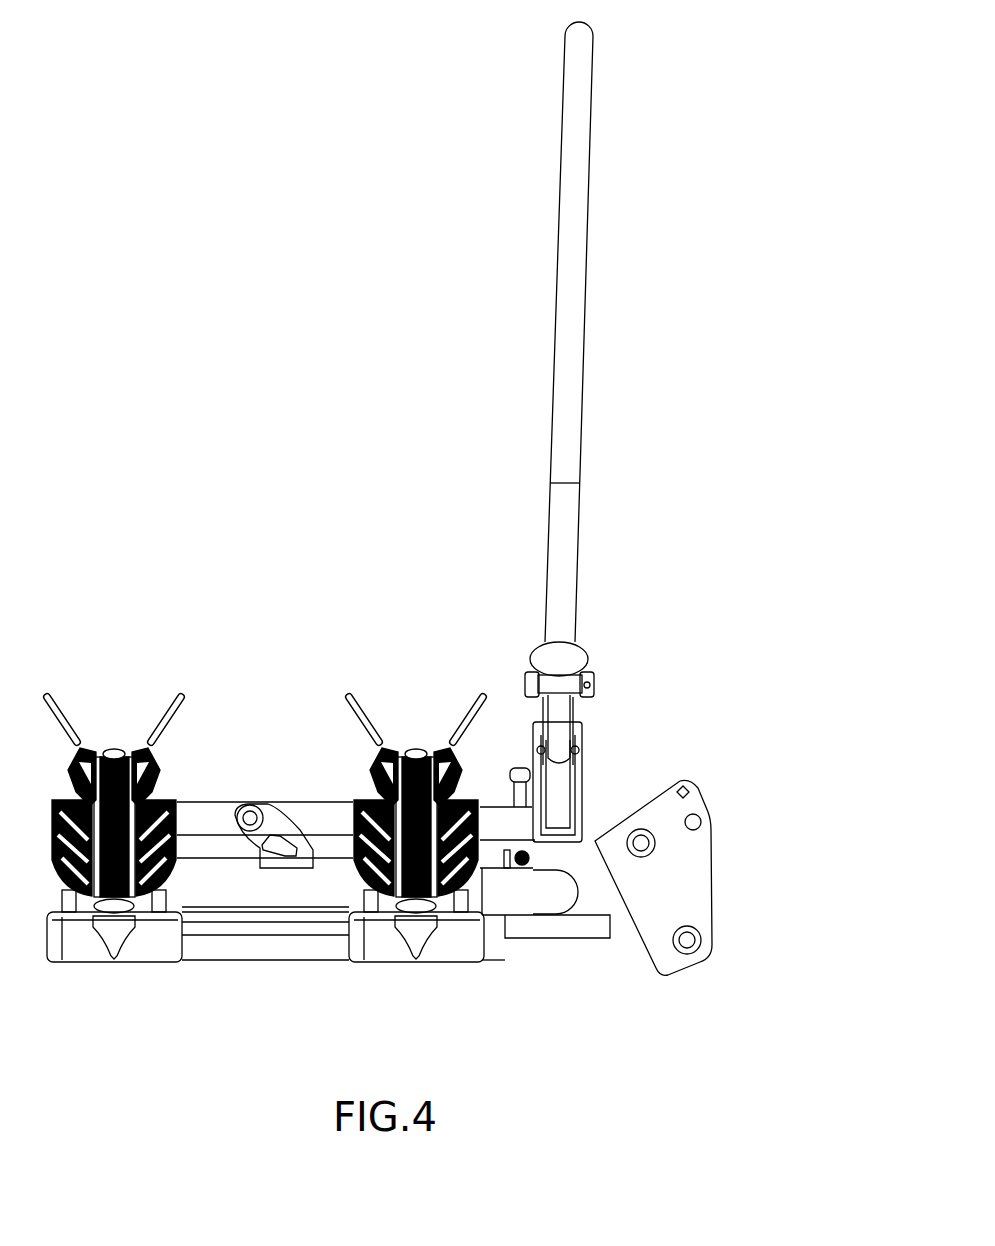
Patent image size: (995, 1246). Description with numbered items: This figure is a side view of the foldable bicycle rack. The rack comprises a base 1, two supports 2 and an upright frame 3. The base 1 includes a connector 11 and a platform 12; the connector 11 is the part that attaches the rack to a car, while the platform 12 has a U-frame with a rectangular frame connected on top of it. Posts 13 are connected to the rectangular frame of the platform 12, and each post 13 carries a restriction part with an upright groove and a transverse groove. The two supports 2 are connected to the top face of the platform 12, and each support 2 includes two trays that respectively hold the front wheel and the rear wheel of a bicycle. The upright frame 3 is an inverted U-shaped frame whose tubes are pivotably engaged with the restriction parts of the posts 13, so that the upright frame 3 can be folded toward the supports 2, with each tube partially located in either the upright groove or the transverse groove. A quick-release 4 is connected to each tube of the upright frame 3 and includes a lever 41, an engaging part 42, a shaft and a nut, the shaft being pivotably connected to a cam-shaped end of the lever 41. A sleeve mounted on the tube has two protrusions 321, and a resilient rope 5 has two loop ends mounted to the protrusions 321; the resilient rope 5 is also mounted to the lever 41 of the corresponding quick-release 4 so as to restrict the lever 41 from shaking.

The base 1 is at (720, 776).
The connector 11 is at (573, 938).
The platform 12 is at (290, 803).
The post 13 is at (533, 870).
The support 2 is at (112, 748).
The upright frame 3 is at (590, 306).
The protrusion 321 is at (592, 688).
The quick-release 4 is at (524, 641).
The lever 41 is at (572, 662).
The engaging part 42 is at (578, 752).
The resilient rope 5 is at (590, 698).